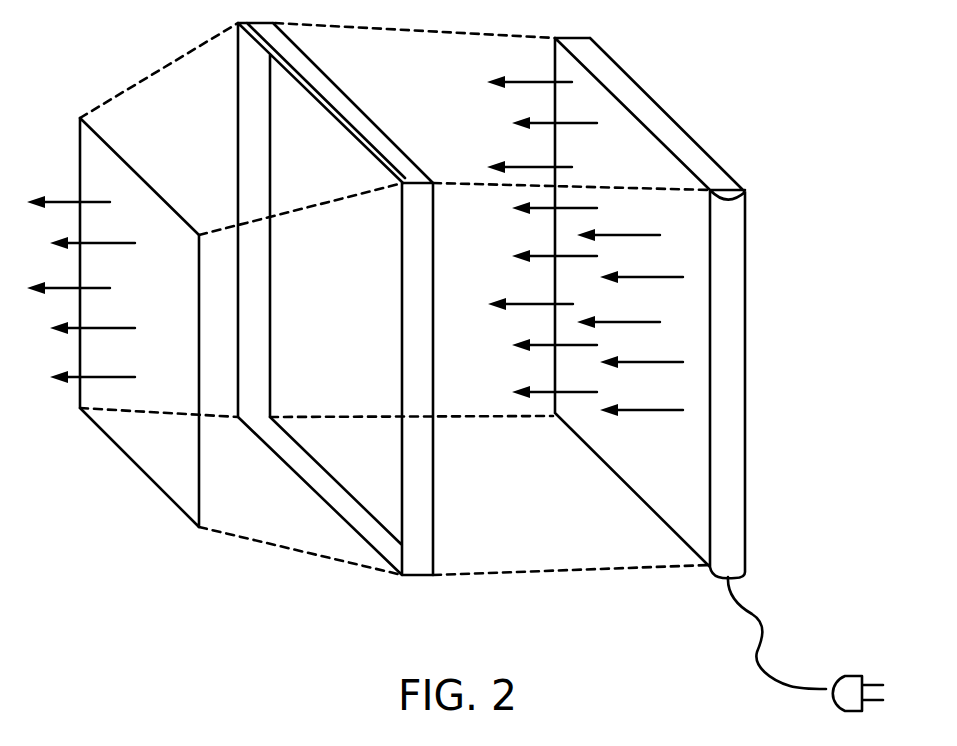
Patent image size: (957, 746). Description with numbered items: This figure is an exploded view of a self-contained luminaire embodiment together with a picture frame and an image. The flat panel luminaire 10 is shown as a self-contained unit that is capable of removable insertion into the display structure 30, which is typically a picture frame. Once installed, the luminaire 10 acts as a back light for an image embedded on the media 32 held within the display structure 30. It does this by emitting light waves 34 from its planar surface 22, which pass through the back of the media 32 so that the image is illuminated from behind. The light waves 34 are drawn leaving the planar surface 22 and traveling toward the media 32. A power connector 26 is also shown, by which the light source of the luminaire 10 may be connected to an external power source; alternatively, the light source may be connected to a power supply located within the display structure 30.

The flat panel luminaire 10 is at (443, 364).
The planar surface 22 is at (597, 95).
The power connector 26 is at (847, 670).
The display structure 30 is at (419, 568).
The media 32 is at (153, 468).
The light waves 34 is at (63, 200).